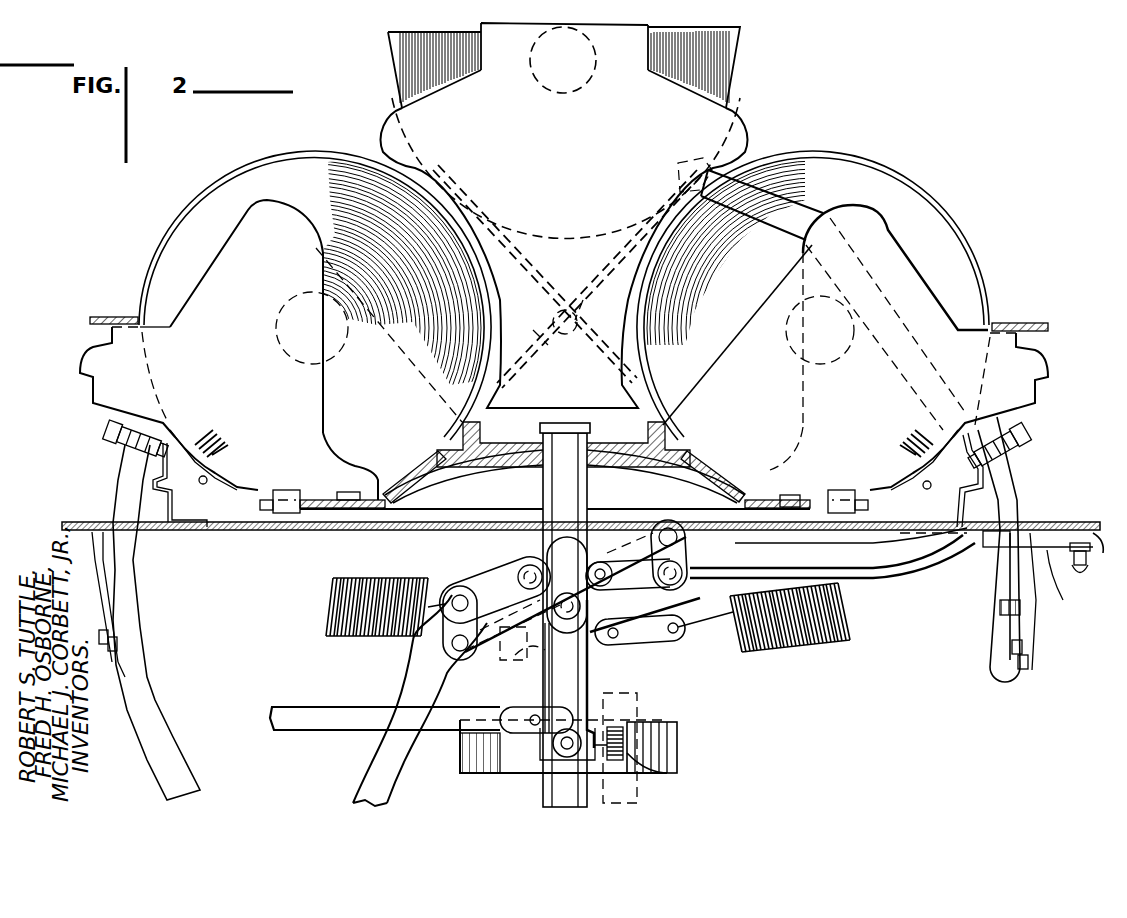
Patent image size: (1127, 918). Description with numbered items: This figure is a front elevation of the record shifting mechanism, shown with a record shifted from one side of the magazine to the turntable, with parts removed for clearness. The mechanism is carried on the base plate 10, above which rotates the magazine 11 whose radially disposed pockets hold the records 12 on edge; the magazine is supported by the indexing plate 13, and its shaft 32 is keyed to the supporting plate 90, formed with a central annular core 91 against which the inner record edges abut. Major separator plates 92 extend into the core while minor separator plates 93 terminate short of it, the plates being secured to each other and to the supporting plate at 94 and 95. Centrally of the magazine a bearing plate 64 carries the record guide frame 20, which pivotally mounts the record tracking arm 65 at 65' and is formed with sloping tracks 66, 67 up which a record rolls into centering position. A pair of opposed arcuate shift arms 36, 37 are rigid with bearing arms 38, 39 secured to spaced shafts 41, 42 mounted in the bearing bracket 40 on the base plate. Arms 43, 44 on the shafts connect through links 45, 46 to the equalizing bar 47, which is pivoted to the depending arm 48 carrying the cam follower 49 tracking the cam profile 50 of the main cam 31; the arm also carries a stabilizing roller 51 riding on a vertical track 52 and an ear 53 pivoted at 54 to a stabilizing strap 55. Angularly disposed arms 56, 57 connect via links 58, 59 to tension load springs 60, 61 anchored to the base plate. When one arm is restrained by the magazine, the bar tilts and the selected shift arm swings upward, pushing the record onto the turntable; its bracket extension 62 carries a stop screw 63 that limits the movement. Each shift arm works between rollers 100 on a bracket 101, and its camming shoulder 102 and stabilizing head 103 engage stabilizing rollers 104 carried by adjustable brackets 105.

The base plate 10 is at (240, 531).
The magazine 11 is at (1033, 323).
The record 12 is at (178, 232).
The indexing plate 13 is at (870, 508).
The record guide frame 20 is at (745, 124).
The main cam 31 is at (677, 750).
The shaft 32 is at (560, 488).
The arcuate shift arm 36 is at (787, 200).
The arcuate shift arm 37 is at (123, 490).
The bearing arm 38 is at (873, 580).
The bearing arm 39 is at (380, 762).
The bearing bracket 40 is at (567, 585).
The shaft 41 is at (601, 562).
The shaft 42 is at (520, 573).
The arm 43 is at (645, 538).
The arm 44 is at (480, 580).
The link 45 is at (690, 557).
The link 46 is at (447, 620).
The equalizing bar 47 is at (497, 650).
The arm 48 is at (577, 667).
The cam follower 49 is at (540, 765).
The cam profile 50 is at (653, 777).
The stabilizing roller 51 is at (610, 727).
The vertical track 52 is at (637, 800).
The ear 53 is at (513, 707).
The pivot connection 54 is at (539, 718).
The stabilizing strap 55 is at (337, 710).
The angularly disposed arm 56 is at (647, 617).
The angularly disposed arm 57 is at (565, 593).
The link 58 is at (660, 640).
The link 59 is at (520, 636).
The tension load spring 60 is at (807, 640).
The tension load spring 61 is at (347, 637).
The bracket extension 62 is at (1063, 585).
The adjustable stop screw 63 is at (1095, 555).
The bearing plate 64 is at (566, 350).
The record tracking arm 65 is at (535, 274).
The pivot of tracking arm 65' is at (599, 279).
The sloping track 66 is at (600, 312).
The sloping track 67 is at (530, 327).
The supporting plate 90 is at (503, 447).
The central annular core 91 is at (663, 440).
The major separator plate 92 is at (390, 338).
The minor separator plate 93 is at (303, 231).
The securing point 94 is at (203, 484).
The securing point 95 is at (283, 514).
The rollers 100 is at (123, 453).
The bracket 101 is at (170, 507).
The camming shoulder 102 is at (1003, 613).
The stabilizing head 103 is at (990, 673).
The stabilizing rollers 104 is at (120, 670).
The brackets 105 is at (1013, 572).